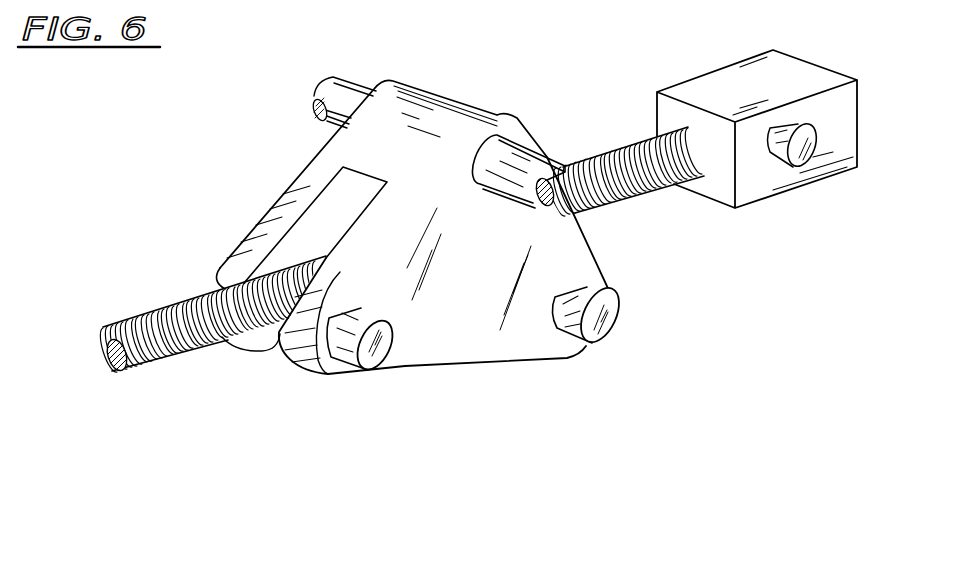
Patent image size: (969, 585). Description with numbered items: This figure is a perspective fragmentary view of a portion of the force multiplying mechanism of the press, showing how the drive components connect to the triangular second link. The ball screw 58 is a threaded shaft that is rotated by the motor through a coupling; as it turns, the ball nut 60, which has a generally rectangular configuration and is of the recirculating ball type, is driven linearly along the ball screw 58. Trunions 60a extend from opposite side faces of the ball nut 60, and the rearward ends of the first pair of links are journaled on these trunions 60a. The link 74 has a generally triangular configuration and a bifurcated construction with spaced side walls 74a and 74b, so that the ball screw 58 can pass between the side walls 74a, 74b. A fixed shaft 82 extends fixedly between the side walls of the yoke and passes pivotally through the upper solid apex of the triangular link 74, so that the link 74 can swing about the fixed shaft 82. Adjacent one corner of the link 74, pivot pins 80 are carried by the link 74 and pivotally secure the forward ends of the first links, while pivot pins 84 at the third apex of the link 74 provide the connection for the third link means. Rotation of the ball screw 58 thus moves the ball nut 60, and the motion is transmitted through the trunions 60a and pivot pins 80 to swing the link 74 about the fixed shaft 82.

The ball screw 58 is at (178, 309).
The ball nut 60 is at (720, 96).
The trunions 60a is at (803, 160).
The link 74 is at (425, 130).
The side wall 74a is at (287, 196).
The side wall 74b is at (373, 224).
The pivot pins 80 is at (608, 318).
The fixed shaft 82 is at (345, 97).
The pivot pins 84 is at (384, 345).